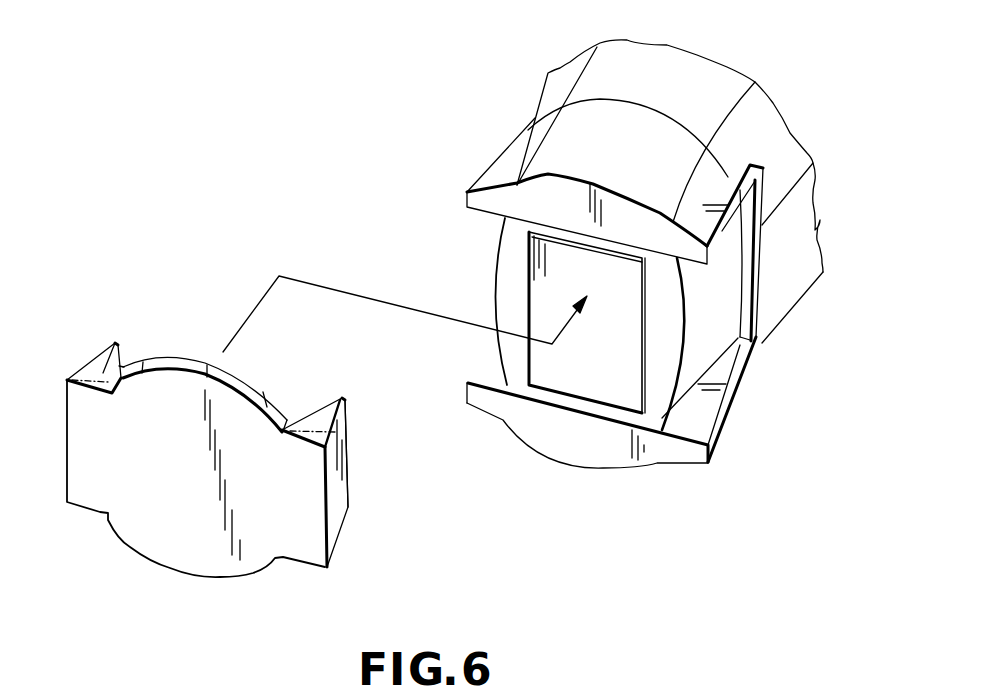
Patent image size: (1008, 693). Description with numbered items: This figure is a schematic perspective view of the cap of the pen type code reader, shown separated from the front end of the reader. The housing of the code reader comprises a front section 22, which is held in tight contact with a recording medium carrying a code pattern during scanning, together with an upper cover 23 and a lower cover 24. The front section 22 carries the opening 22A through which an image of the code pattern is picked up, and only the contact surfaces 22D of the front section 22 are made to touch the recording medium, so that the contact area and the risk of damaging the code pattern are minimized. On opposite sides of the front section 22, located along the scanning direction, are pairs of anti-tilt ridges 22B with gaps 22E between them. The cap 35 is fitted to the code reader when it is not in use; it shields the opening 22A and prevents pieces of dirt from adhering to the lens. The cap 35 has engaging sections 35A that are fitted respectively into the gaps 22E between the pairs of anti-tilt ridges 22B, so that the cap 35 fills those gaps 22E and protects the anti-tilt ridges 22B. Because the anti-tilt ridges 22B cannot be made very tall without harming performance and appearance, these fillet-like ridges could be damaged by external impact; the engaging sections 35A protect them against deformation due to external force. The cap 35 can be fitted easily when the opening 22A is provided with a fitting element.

The front section 22 is at (577, 148).
The opening 22A is at (567, 367).
The anti-tilt ridges 22B is at (722, 232).
The contact surfaces 22D is at (492, 202).
The gaps 22E is at (717, 333).
The upper cover 23 is at (787, 140).
The lower cover 24 is at (785, 287).
The cap 35 is at (300, 533).
The engaging sections 35A is at (63, 450).